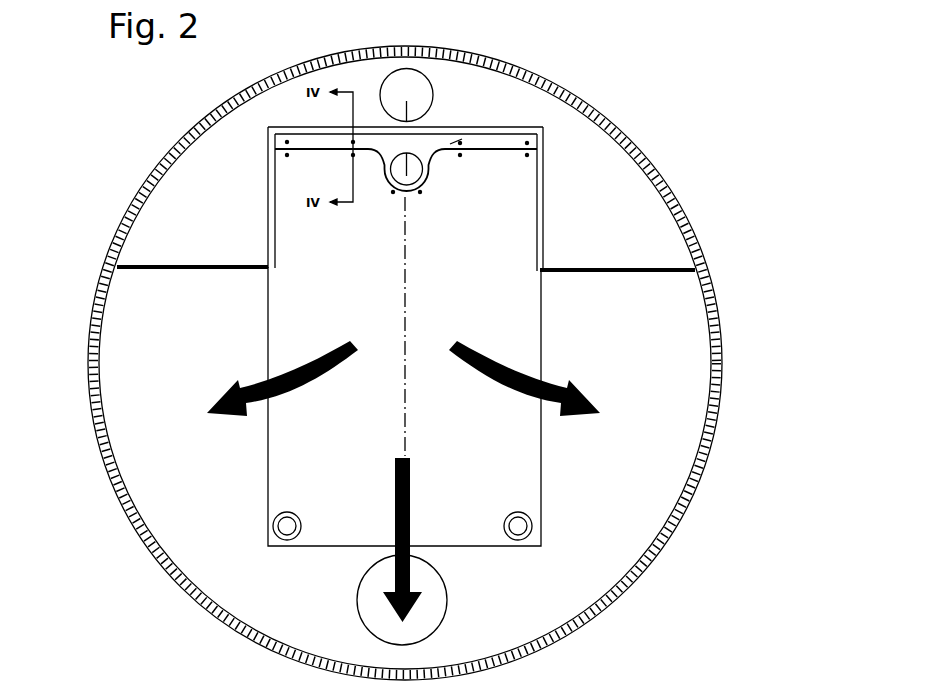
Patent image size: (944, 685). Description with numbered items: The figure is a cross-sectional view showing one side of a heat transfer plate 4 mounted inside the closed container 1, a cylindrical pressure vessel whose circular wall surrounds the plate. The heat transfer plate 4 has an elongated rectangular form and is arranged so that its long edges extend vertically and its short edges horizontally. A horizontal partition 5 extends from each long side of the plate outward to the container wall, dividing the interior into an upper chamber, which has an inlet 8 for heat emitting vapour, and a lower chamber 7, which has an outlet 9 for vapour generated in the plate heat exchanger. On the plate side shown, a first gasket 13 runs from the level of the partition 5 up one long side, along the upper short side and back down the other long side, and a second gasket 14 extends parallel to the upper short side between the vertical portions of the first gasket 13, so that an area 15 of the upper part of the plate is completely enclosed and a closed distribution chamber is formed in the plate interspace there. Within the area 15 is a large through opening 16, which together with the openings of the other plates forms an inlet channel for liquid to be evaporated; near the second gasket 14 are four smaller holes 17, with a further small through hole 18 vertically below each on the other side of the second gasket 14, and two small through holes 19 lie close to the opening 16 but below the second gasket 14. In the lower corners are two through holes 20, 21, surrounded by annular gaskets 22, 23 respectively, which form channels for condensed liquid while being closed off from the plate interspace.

The container 1 is at (720, 395).
The heat transfer plate 4 is at (262, 322).
The partition 5 is at (673, 270).
The lower chamber 7 is at (678, 342).
The inlet 8 is at (417, 96).
The outlet 9 is at (430, 612).
The first gasket 13 is at (327, 125).
The second gasket 14 is at (295, 157).
The area 15 is at (295, 124).
The through opening 16 is at (486, 127).
The smaller holes 17 is at (547, 136).
The small through hole 18 is at (527, 155).
The small through holes 19 is at (420, 192).
The through hole 20 is at (285, 526).
The through hole 21 is at (519, 527).
The annular gasket 22 is at (273, 522).
The annular gasket 23 is at (531, 522).